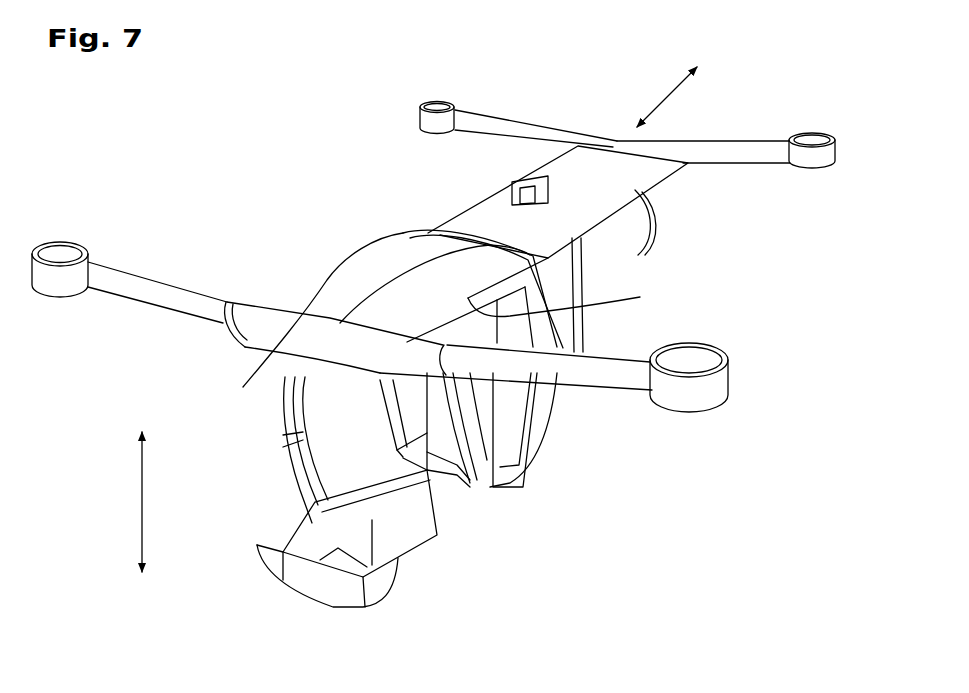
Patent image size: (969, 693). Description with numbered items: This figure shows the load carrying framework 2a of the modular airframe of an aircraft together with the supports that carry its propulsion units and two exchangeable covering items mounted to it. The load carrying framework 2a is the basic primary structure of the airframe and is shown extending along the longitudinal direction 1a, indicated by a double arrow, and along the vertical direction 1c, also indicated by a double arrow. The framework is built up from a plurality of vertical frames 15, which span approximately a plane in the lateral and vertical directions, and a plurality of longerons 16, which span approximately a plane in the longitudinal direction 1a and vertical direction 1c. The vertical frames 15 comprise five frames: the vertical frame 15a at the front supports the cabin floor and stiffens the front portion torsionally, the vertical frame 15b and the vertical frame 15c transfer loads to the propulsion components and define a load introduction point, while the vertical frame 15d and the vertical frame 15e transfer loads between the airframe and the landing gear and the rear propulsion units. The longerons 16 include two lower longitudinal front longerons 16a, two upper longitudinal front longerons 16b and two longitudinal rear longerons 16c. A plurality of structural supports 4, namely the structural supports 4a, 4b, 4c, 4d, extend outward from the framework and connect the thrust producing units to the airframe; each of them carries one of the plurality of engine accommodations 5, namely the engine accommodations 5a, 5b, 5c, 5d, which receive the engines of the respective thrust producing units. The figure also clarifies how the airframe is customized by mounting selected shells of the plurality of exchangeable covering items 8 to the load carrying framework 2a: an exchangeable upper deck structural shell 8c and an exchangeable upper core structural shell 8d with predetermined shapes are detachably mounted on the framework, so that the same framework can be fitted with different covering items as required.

The longitudinal direction 1a is at (658, 100).
The vertical direction 1c is at (140, 500).
The load carrying framework 2a is at (213, 147).
The plurality of structural supports 4 is at (213, 333).
The structural support 4a is at (125, 288).
The structural support 4b is at (500, 128).
The structural support 4c is at (627, 373).
The structural support 4d is at (767, 148).
The plurality of engine accommodations 5 is at (97, 250).
The engine accommodation 5a is at (50, 275).
The engine accommodation 5b is at (420, 118).
The engine accommodation 5c is at (713, 393).
The engine accommodation 5d is at (825, 157).
The plurality of exchangeable covering items 8 is at (268, 361).
The exchangeable upper deck structural shell 8c is at (352, 302).
The exchangeable upper core structural shell 8d is at (622, 173).
The plurality of vertical frames 15 is at (419, 230).
The vertical frame 15a is at (308, 580).
The vertical frame 15b is at (455, 515).
The vertical frame 15c is at (530, 448).
The vertical frame 15d is at (530, 188).
The vertical frame 15e is at (657, 197).
The plurality of longerons 16 is at (620, 294).
The lower longitudinal front longeron 16a is at (308, 545).
The upper longitudinal front longeron 16b is at (343, 258).
The longitudinal rear longeron 16c is at (548, 153).